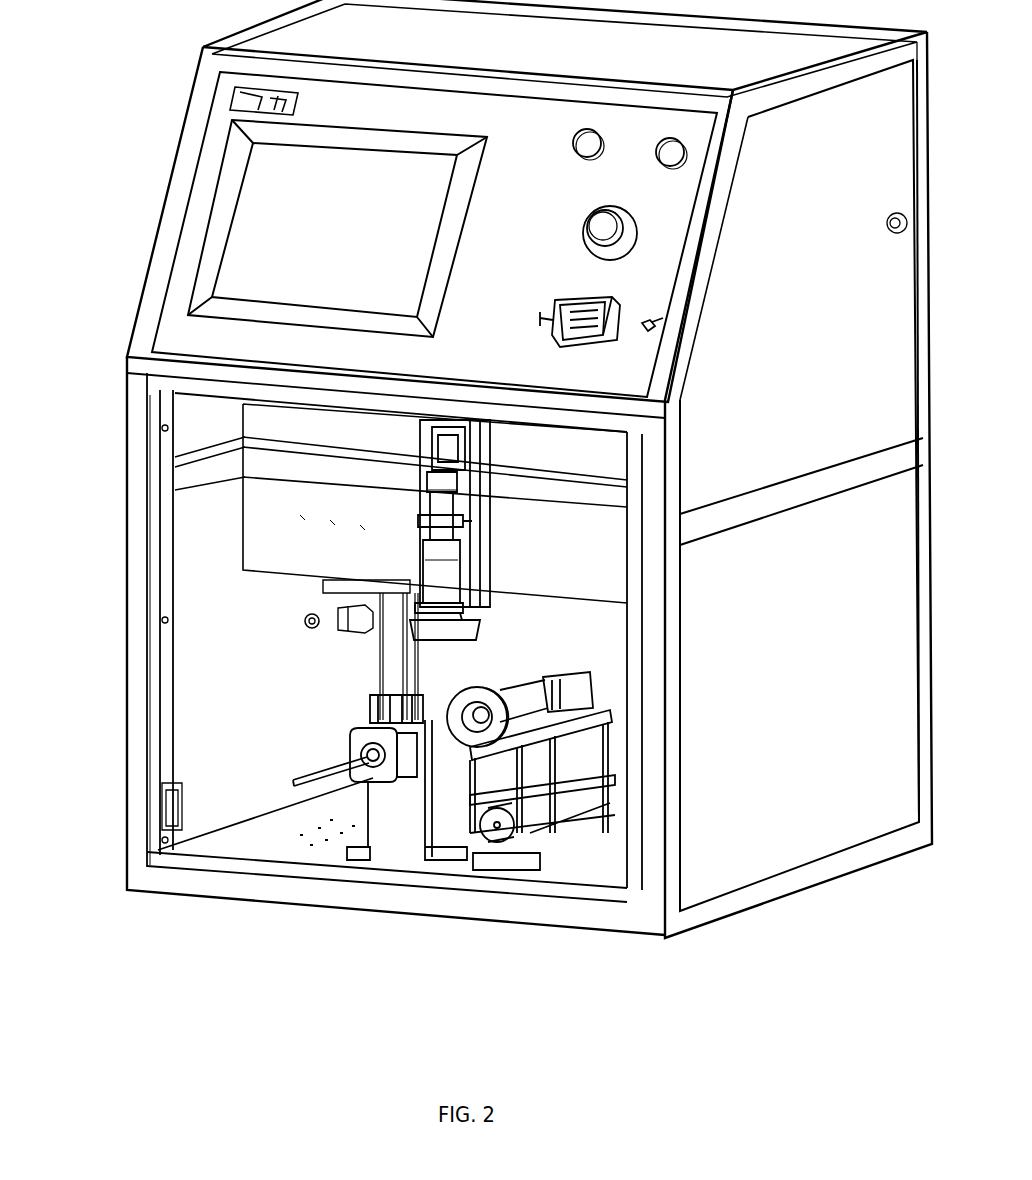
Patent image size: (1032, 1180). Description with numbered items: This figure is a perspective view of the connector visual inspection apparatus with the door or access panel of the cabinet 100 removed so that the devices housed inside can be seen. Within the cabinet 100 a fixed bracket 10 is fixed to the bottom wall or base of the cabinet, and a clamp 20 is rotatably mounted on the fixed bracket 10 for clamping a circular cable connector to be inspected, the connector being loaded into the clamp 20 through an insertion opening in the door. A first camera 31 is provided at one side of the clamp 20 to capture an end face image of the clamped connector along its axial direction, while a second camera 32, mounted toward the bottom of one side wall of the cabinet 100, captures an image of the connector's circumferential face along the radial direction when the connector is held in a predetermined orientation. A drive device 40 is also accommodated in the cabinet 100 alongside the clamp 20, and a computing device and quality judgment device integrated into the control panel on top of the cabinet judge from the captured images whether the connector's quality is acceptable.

The cabinet 100 is at (140, 552).
The fixed bracket 10 is at (387, 810).
The clamp 20 is at (373, 703).
The first camera 31 is at (517, 700).
The second camera 32 is at (442, 568).
The drive device 40 is at (497, 845).